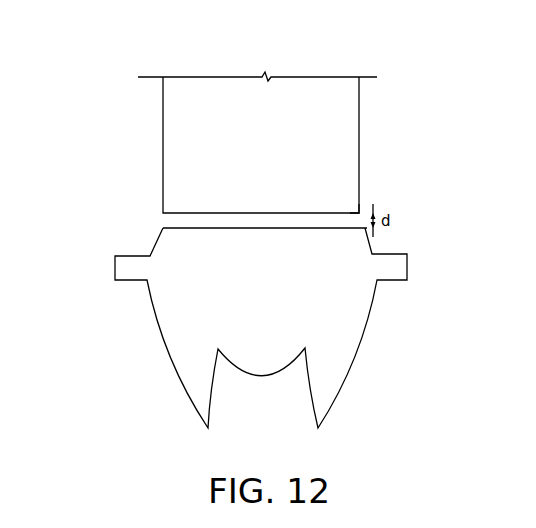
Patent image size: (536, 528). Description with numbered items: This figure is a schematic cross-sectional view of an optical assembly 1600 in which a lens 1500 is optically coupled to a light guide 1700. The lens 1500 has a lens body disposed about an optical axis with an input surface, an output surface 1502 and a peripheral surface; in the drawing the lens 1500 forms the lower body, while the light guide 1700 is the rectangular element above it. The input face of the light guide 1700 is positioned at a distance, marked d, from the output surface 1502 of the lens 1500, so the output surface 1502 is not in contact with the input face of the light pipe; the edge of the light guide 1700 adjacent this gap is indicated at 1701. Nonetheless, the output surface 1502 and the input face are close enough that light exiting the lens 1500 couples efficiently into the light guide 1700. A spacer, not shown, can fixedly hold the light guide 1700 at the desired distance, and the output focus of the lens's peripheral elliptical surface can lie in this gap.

The lens 1500 is at (152, 386).
The output surface 1502 is at (163, 222).
The optical assembly 1600 is at (162, 47).
The light guide 1700 is at (155, 104).
The corner edge of block 1701 is at (356, 213).